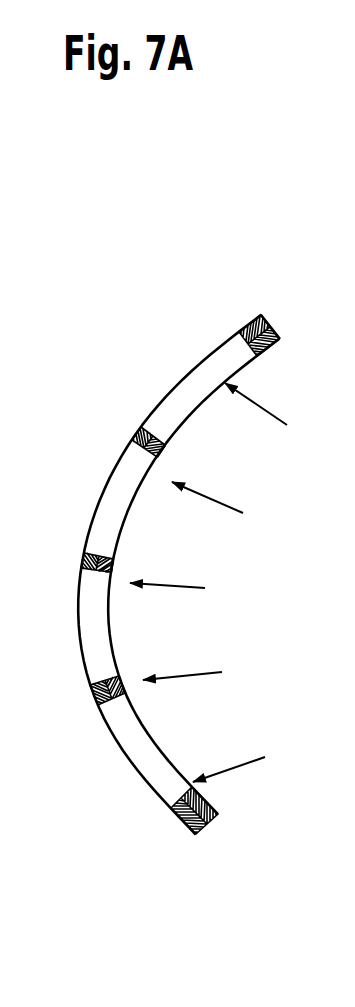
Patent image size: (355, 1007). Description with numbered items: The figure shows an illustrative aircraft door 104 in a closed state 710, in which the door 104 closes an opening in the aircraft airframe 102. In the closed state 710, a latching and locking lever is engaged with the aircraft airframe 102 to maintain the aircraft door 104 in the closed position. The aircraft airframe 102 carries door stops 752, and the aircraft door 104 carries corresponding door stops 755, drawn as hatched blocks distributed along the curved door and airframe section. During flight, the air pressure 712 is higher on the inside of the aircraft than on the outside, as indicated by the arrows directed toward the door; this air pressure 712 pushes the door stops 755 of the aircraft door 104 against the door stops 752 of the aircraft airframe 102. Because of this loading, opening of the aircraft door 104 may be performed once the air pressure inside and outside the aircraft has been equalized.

The closed state 710 is at (155, 270).
The aircraft airframe 102 is at (265, 315).
The aircraft door 104 is at (283, 320).
The door stops 752 is at (139, 427).
The door stops 755 is at (160, 441).
The air pressure 712 is at (238, 767).